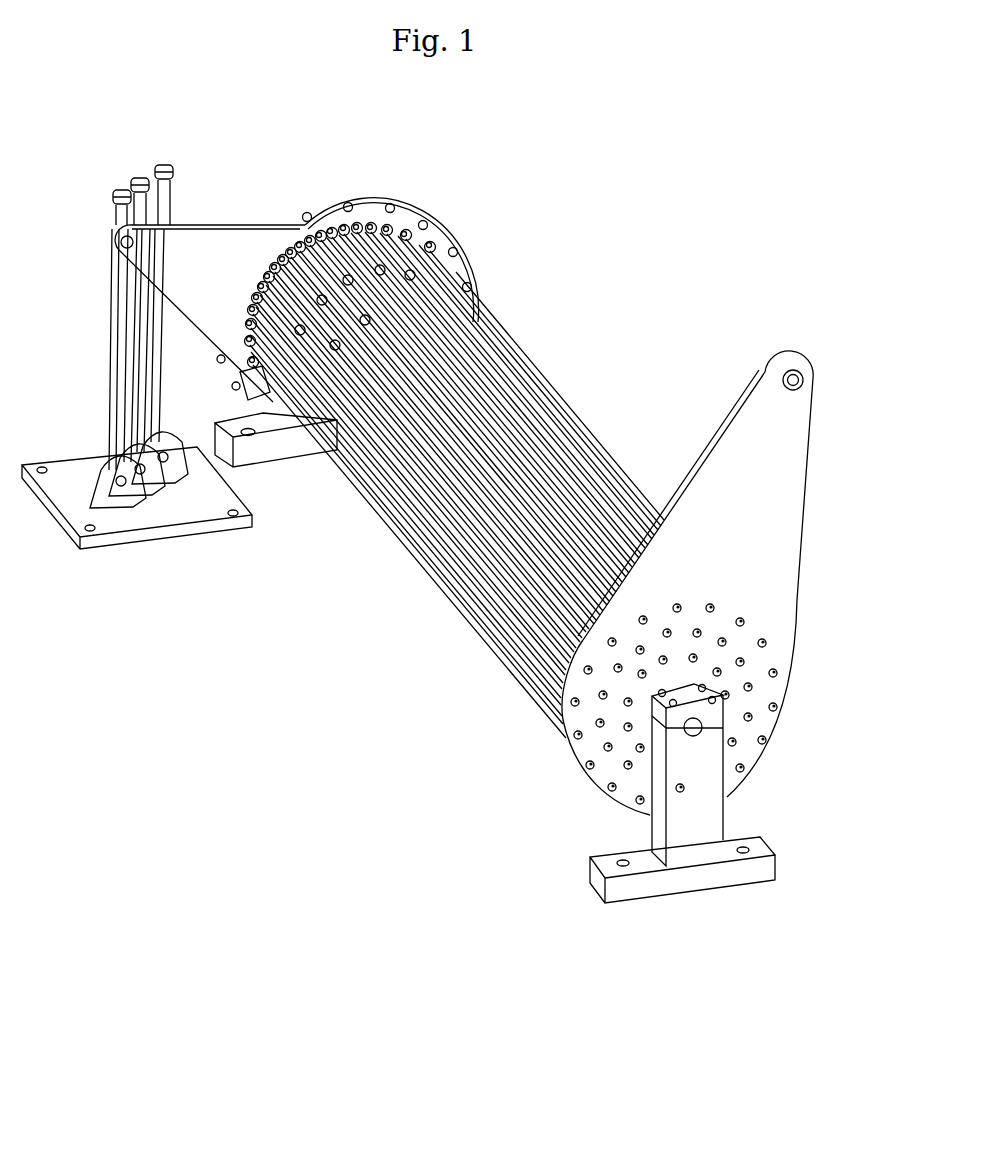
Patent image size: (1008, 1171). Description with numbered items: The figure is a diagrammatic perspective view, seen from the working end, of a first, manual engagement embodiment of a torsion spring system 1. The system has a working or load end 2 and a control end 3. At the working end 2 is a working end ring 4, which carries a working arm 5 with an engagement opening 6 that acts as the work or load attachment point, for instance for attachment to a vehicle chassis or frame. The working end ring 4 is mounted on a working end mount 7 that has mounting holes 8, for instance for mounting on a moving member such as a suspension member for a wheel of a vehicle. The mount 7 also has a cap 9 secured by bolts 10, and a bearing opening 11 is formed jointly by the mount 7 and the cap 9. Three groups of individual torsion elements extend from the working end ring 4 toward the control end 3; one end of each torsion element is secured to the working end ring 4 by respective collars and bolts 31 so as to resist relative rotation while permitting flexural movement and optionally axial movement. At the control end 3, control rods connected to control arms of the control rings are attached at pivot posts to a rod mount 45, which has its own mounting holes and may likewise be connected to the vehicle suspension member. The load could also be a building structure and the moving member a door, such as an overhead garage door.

The torsion spring system 1 is at (617, 243).
The working end 2 is at (820, 574).
The control end 3 is at (276, 136).
The working end ring 4 is at (563, 752).
The working arm 5 is at (795, 470).
The engagement opening 6 is at (801, 378).
The working end mount 7 is at (680, 878).
The mounting holes 8 is at (622, 860).
The cap 9 is at (677, 720).
The bolts 10 is at (663, 690).
The bearing opening 11 is at (700, 732).
The bolts 31 is at (778, 672).
The rod mount 45 is at (185, 512).